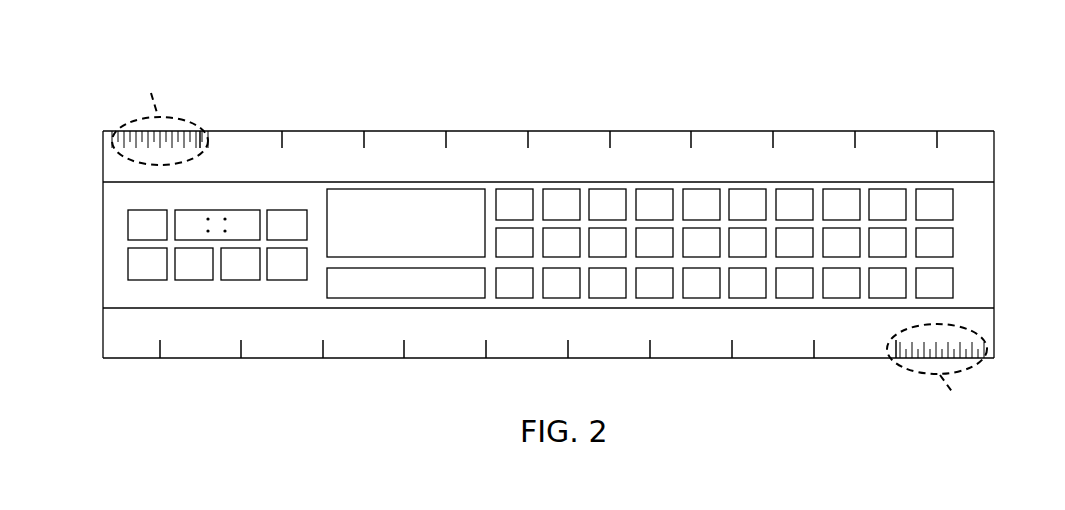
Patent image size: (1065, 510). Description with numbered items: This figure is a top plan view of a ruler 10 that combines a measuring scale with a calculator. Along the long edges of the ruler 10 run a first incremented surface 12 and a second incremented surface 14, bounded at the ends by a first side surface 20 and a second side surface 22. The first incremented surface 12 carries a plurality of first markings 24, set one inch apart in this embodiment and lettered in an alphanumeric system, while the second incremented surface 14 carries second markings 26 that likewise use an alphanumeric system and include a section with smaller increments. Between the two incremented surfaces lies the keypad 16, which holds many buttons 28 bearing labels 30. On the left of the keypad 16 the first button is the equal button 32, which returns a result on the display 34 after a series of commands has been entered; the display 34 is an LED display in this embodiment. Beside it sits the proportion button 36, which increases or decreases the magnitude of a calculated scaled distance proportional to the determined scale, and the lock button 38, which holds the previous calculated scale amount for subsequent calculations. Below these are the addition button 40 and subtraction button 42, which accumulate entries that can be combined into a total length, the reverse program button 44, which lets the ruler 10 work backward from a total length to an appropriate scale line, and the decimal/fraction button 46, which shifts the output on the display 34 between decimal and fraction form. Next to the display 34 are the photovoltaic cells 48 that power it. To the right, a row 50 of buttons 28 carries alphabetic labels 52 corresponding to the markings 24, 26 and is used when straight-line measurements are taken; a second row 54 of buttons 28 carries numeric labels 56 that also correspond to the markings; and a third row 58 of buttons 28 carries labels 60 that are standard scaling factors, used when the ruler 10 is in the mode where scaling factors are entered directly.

The ruler 10 is at (582, 104).
The first incremented surface 12 is at (608, 340).
The second incremented surface 14 is at (735, 141).
The keypad 16 is at (307, 195).
The first side surface 20 is at (1000, 244).
The second side surface 22 is at (103, 192).
The first markings 24 is at (650, 360).
The second markings 26 is at (773, 131).
The buttons 28 is at (947, 189).
The labels 30 is at (926, 309).
The equal button 32 is at (128, 224).
The display 34 is at (392, 200).
The proportion button 36 is at (190, 232).
The lock button 38 is at (270, 210).
The addition button 40 is at (128, 263).
The subtraction button 42 is at (196, 275).
The reverse program button 44 is at (240, 275).
The decimal/fraction button 46 is at (287, 275).
The photovoltaic cells 48 is at (418, 300).
The row of buttons 50 is at (947, 205).
The alphabetic labels 52 is at (790, 189).
The second row of buttons 54 is at (947, 235).
The numeric labels 56 is at (937, 240).
The third row of buttons 58 is at (947, 280).
The scaling factor labels 60 is at (795, 299).